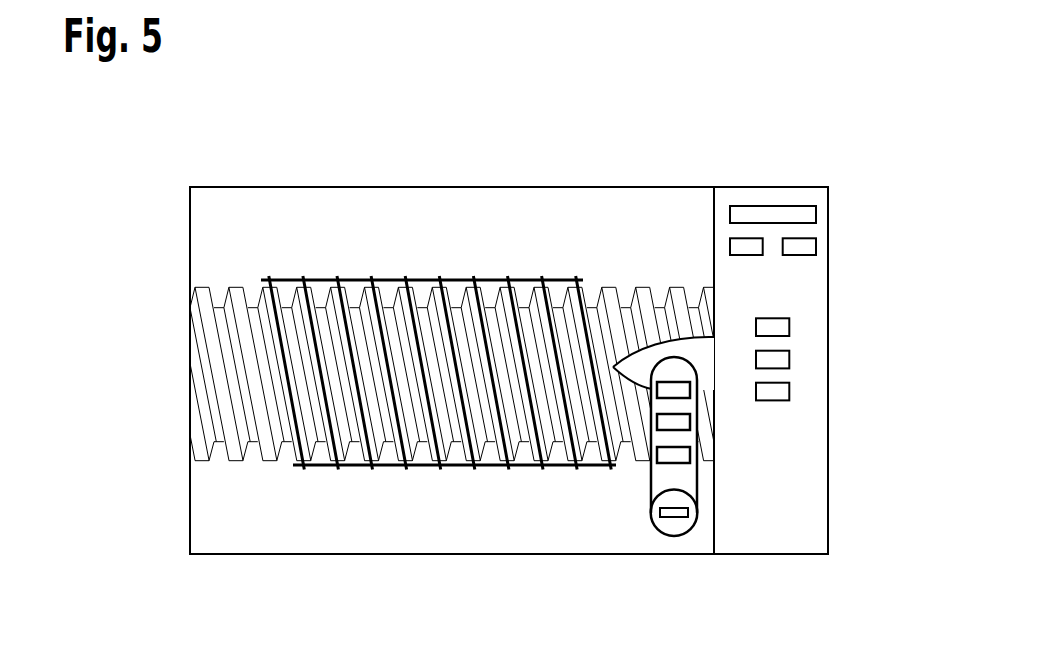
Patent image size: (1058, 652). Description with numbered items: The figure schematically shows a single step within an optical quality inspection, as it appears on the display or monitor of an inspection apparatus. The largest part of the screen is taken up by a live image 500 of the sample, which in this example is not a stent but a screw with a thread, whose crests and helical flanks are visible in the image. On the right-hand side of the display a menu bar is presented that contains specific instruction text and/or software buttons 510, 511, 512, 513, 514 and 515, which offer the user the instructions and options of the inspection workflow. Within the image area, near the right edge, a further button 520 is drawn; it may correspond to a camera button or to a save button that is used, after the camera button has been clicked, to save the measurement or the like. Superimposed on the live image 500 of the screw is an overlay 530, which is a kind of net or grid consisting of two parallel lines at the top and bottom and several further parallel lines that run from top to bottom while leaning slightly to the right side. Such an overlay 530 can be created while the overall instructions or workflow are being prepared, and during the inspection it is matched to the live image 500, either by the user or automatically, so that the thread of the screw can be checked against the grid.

The live image 500 is at (236, 254).
The button 510 is at (816, 213).
The button 511 is at (750, 255).
The button 512 is at (816, 246).
The button 513 is at (789, 327).
The button 514 is at (789, 359).
The button 515 is at (789, 391).
The button 520 is at (672, 537).
The overlay 530 is at (358, 280).